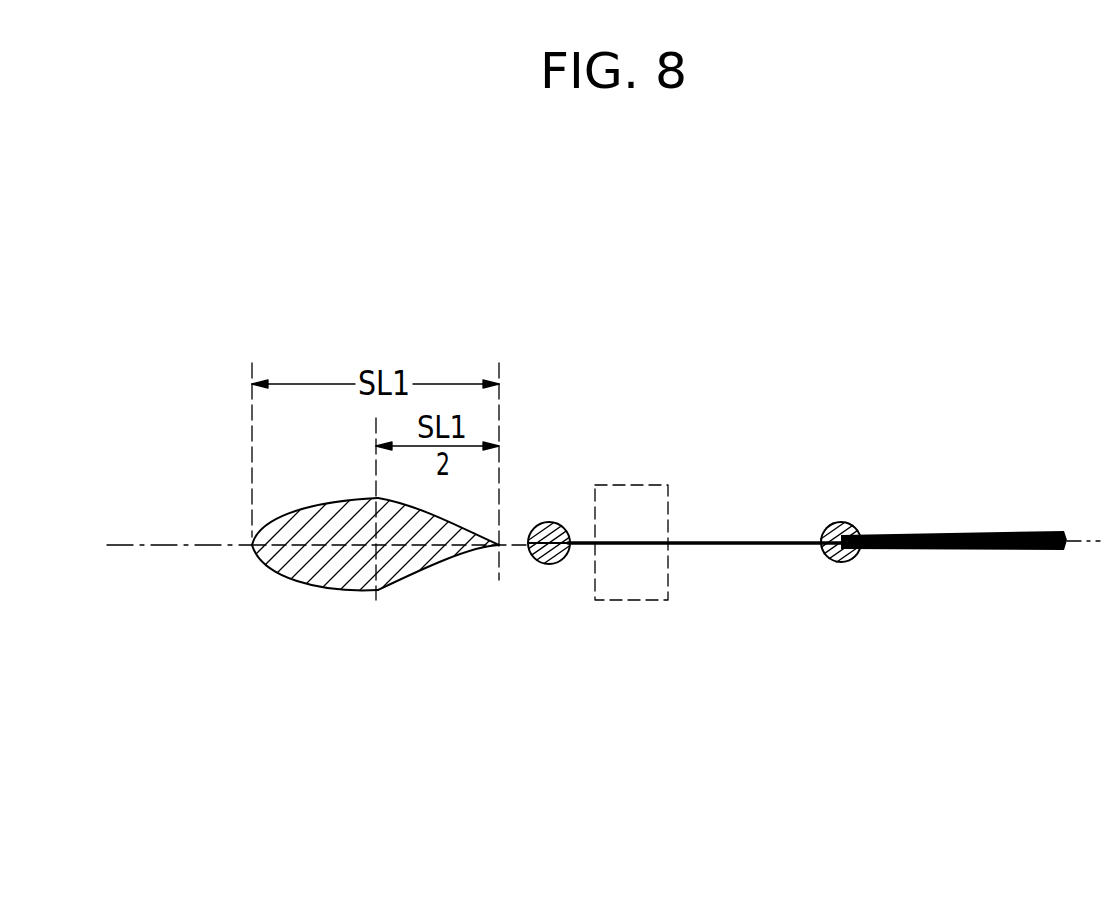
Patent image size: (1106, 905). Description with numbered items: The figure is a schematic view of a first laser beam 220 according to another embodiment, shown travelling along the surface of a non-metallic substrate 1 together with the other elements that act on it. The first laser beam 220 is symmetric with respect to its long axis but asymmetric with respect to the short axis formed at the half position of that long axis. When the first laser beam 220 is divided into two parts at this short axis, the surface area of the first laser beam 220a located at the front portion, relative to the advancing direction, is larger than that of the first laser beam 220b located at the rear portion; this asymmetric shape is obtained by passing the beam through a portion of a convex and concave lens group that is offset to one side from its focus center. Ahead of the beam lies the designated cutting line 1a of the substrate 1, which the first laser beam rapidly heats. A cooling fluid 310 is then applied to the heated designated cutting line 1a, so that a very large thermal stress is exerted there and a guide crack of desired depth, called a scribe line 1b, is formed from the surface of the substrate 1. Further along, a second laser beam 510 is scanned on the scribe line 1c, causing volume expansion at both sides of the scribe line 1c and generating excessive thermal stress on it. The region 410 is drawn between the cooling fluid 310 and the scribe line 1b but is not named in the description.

The non-metallic substrate 1 is at (972, 803).
The designated cutting line 1a is at (148, 550).
The scribe line 1b is at (732, 546).
The scribe line 1c is at (942, 548).
The first laser beam 220 is at (370, 626).
The first laser beam front portion 220a is at (323, 570).
The first laser beam rear portion 220b is at (397, 583).
The cooling fluid 310 is at (546, 522).
The holder region 410 is at (655, 490).
The second laser beam 510 is at (838, 520).